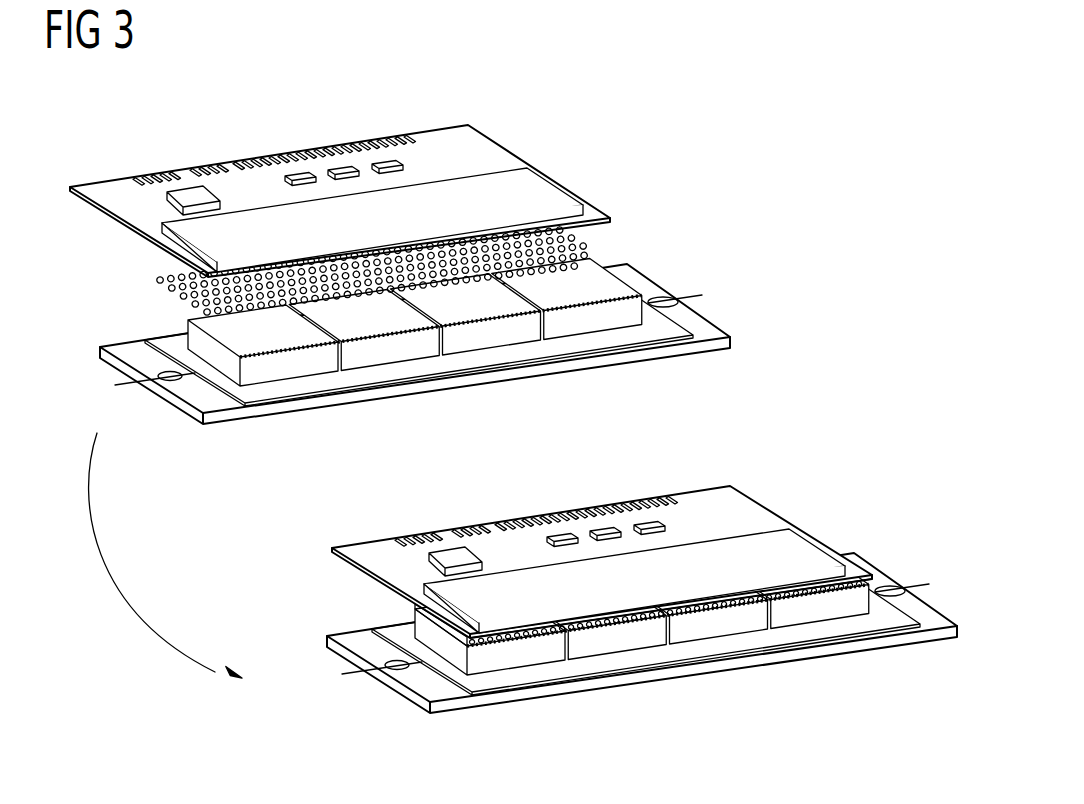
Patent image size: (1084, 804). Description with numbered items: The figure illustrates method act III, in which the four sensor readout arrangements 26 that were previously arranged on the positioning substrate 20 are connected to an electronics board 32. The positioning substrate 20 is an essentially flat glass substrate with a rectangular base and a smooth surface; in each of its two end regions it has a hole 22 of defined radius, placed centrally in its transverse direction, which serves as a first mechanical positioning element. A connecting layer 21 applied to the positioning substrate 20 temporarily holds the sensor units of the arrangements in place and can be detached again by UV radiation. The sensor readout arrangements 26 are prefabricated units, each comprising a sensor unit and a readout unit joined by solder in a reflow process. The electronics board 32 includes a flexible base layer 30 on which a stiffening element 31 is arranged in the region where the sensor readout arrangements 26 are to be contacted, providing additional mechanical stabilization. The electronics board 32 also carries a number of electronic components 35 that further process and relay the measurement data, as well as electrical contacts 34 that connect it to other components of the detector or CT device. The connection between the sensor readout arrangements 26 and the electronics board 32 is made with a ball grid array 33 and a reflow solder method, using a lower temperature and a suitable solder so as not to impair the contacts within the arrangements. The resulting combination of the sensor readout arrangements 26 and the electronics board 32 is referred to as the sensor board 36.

The positioning substrate 20 is at (120, 350).
The connecting layer 21 is at (165, 340).
The hole 22 is at (668, 298).
The sensor readout arrangement 26 is at (323, 366).
The flexible base layer 30 is at (473, 160).
The stiffening element 31 is at (540, 197).
The electronics board 32 is at (471, 345).
The ball grid array 33 is at (596, 251).
The electrical contacts 34 is at (212, 173).
The electronic components 35 is at (385, 163).
The sensor board 36 is at (867, 500).
The method act III is at (110, 600).